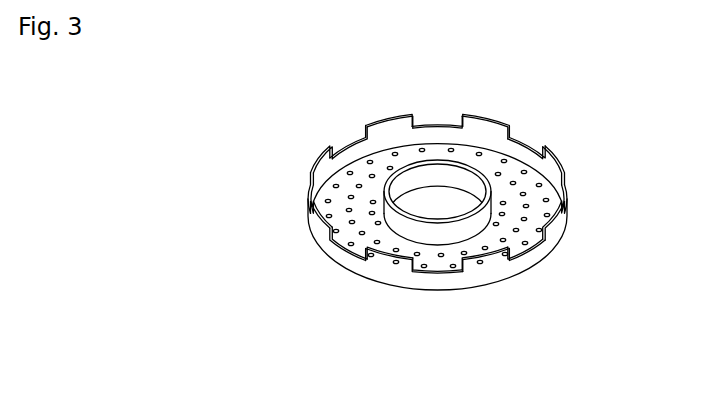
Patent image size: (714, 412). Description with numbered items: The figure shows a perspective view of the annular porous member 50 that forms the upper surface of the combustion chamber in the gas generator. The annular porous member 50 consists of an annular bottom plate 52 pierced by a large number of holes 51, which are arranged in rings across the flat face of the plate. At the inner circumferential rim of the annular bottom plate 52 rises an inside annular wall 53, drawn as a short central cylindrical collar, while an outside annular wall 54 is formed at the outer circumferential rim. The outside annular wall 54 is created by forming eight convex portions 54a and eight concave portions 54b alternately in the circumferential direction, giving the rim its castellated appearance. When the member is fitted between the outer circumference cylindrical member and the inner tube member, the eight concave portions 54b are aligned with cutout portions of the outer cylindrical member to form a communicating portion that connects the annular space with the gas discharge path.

The annular porous member 50 is at (499, 114).
The holes 51 is at (352, 168).
The annular bottom plate 52 is at (405, 153).
The inside annular wall 53 is at (438, 235).
The outside annular wall 54 is at (487, 265).
The convex portions 54a is at (387, 267).
The concave portions 54b is at (337, 247).